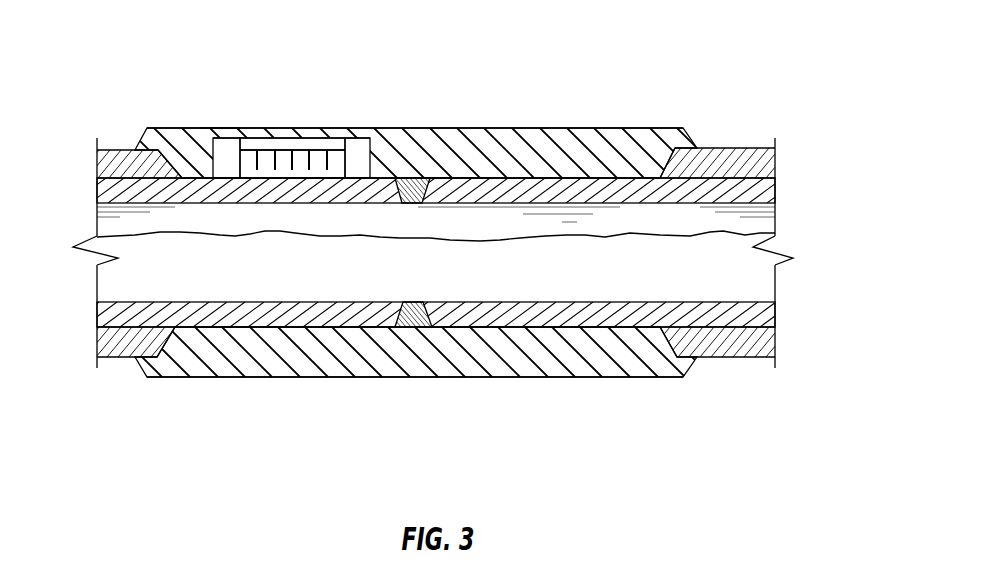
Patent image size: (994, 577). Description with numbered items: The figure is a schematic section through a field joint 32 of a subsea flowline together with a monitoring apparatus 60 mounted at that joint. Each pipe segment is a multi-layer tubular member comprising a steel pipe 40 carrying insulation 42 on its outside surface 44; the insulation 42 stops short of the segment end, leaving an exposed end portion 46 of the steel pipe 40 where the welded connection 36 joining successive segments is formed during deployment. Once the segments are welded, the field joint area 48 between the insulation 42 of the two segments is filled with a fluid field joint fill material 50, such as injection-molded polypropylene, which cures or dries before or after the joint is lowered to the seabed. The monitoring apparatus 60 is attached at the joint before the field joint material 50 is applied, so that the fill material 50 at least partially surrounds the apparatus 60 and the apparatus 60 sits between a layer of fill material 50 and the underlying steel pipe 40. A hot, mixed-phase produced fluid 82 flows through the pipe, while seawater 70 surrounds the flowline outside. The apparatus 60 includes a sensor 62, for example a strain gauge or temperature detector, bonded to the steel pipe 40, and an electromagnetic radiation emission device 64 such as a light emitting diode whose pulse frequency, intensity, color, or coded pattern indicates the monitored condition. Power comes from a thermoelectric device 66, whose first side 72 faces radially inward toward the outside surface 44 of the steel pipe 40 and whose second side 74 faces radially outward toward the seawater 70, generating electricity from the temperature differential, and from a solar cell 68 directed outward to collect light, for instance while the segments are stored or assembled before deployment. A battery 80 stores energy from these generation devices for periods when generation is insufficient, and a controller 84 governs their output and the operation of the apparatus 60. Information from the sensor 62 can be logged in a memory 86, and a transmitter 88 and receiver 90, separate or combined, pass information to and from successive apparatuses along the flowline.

The field joint 32 is at (405, 97).
The welded connection 36 is at (412, 177).
The steel pipe 40 is at (107, 190).
The insulation 42 is at (113, 148).
The outside surface 44 is at (585, 177).
The end portion 46 is at (289, 334).
The field joint area 48 is at (148, 432).
The field joint fill material 50 is at (540, 127).
The monitoring apparatus 60 is at (292, 122).
The sensor 62 is at (345, 178).
The electromagnetic radiation emission device 64 is at (358, 167).
The thermoelectric device 66 is at (230, 160).
The solar cell 68 is at (338, 138).
The seawater 70 is at (490, 20).
The first side 72 is at (247, 167).
The second side 74 is at (220, 137).
The battery 80 is at (265, 167).
The produced fluid 82 is at (733, 268).
The controller 84 is at (335, 167).
The memory 86 is at (317, 167).
The transmitter 88 is at (282, 167).
The receiver 90 is at (300, 167).